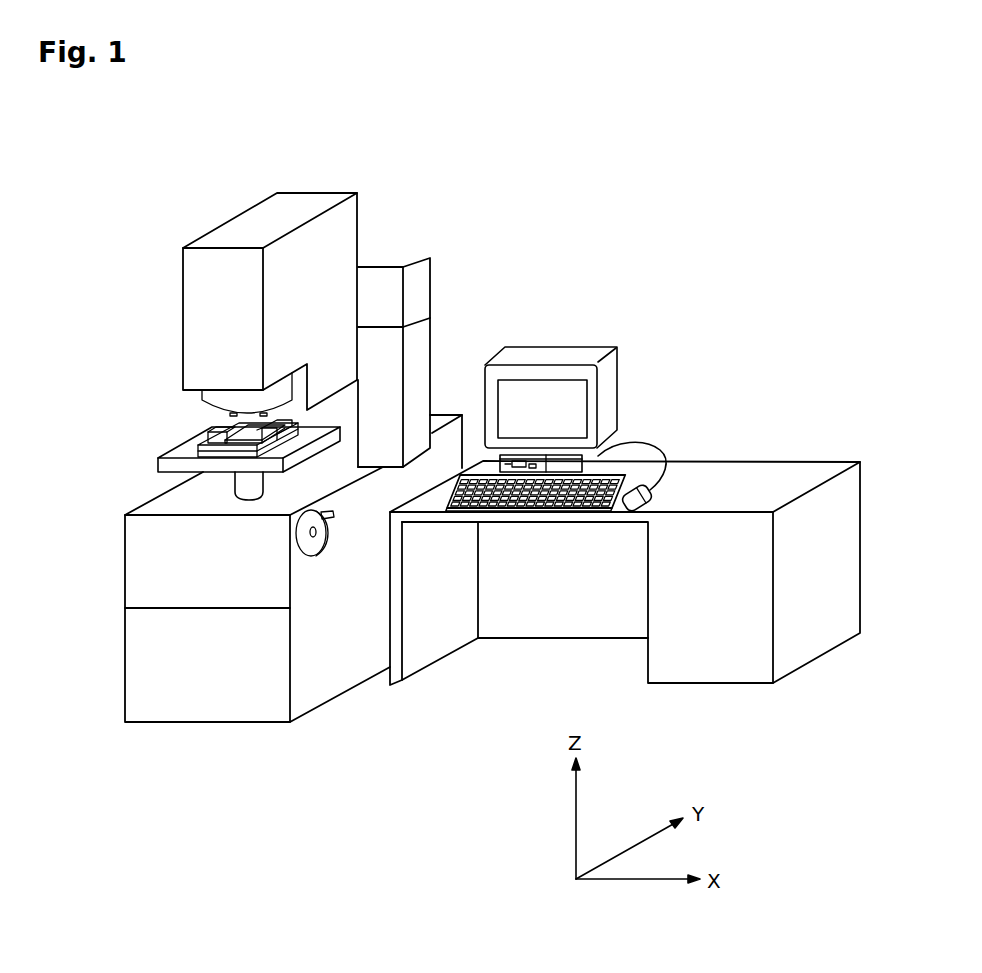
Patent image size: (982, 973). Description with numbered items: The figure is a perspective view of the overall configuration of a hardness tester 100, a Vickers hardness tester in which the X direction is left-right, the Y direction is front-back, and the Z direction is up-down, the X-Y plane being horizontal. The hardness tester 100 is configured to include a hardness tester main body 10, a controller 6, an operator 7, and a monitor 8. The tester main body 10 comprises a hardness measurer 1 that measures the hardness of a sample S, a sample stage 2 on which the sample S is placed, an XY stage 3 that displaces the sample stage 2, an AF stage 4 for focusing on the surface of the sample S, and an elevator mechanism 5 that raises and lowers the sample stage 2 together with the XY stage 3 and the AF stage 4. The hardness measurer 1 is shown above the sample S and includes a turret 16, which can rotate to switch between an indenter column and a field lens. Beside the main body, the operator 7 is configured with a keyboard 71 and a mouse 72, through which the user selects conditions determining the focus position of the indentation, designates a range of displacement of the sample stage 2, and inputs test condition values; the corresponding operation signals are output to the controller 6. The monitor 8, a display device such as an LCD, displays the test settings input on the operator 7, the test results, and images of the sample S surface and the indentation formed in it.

The hardness tester 100 is at (621, 209).
The hardness measurer 1 is at (248, 228).
The turret 16 is at (237, 397).
The hardness tester main body 10 is at (461, 254).
The XY stage 3 is at (156, 463).
The elevator mechanism 5 is at (247, 490).
The AF stage 4 is at (197, 450).
The sample stage 2 is at (206, 442).
The sample S is at (240, 437).
The monitor 8 is at (558, 353).
The controller 6 is at (603, 455).
The operator 7 is at (627, 574).
The keyboard 71 is at (517, 506).
The mouse 72 is at (625, 508).